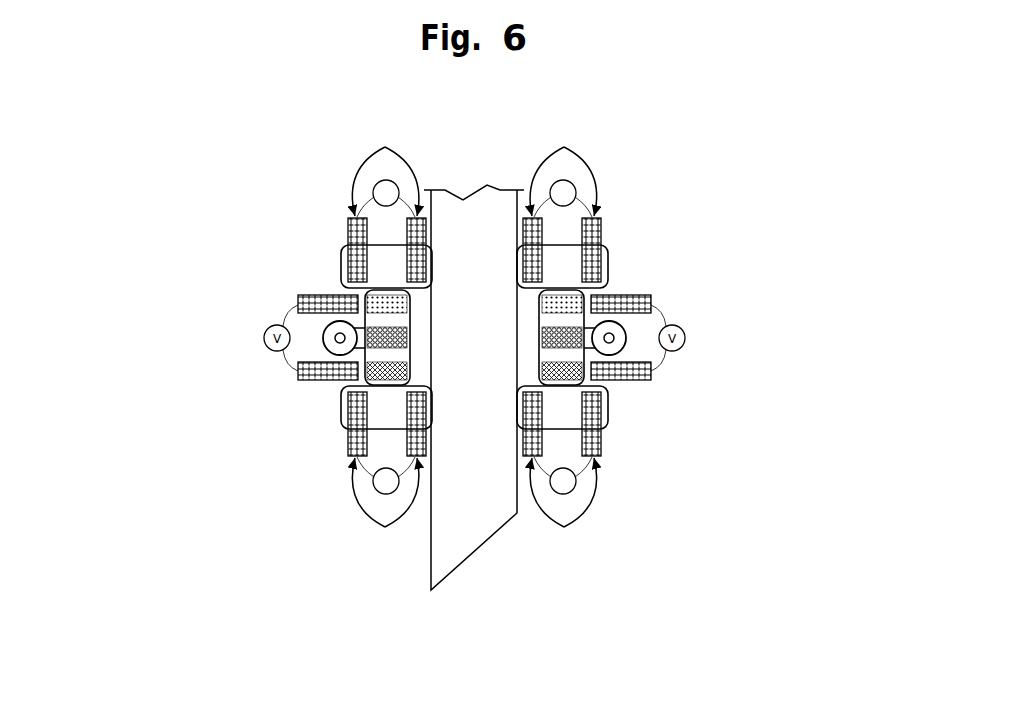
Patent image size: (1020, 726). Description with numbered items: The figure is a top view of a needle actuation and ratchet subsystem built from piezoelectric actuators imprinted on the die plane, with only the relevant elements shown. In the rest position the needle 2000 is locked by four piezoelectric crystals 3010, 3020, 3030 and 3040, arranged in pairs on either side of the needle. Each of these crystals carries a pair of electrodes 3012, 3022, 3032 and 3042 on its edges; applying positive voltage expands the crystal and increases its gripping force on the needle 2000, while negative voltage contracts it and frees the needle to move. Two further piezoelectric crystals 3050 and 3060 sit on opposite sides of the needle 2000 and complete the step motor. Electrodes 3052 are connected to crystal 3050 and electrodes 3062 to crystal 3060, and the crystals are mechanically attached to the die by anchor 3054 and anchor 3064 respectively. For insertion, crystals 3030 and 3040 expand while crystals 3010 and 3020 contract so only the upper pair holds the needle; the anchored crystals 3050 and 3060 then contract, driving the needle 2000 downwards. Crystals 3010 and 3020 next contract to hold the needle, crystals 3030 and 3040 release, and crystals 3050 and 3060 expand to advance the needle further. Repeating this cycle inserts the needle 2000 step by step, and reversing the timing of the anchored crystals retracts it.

The needle 2000 is at (481, 556).
The piezoelectric crystal 3010 is at (339, 413).
The pair of electrodes 3012 is at (387, 511).
The piezoelectric crystal 3020 is at (611, 413).
The pair of electrodes 3022 is at (563, 511).
The piezoelectric crystal 3030 is at (339, 263).
The pair of electrodes 3032 is at (385, 164).
The piezoelectric crystal 3040 is at (611, 263).
The pair of electrodes 3042 is at (559, 164).
The piezoelectric crystal 3050 is at (362, 303).
The electrodes 3052 is at (336, 358).
The anchor 3054 is at (296, 375).
The piezoelectric crystal 3060 is at (588, 303).
The electrodes 3062 is at (614, 358).
The anchor 3064 is at (654, 375).